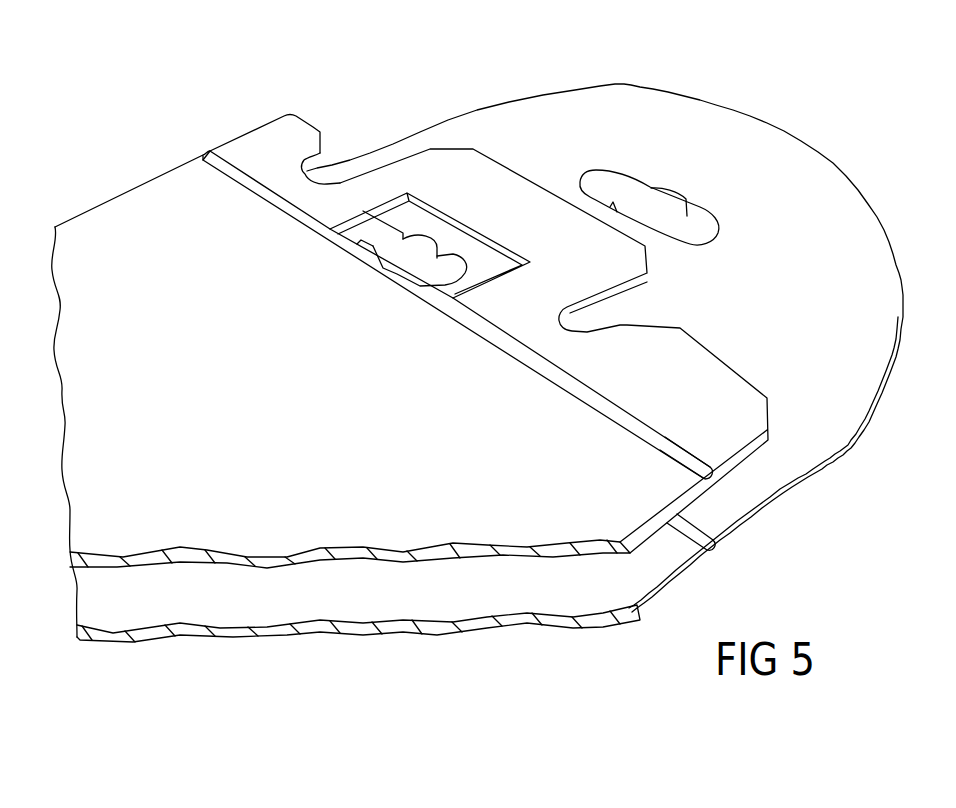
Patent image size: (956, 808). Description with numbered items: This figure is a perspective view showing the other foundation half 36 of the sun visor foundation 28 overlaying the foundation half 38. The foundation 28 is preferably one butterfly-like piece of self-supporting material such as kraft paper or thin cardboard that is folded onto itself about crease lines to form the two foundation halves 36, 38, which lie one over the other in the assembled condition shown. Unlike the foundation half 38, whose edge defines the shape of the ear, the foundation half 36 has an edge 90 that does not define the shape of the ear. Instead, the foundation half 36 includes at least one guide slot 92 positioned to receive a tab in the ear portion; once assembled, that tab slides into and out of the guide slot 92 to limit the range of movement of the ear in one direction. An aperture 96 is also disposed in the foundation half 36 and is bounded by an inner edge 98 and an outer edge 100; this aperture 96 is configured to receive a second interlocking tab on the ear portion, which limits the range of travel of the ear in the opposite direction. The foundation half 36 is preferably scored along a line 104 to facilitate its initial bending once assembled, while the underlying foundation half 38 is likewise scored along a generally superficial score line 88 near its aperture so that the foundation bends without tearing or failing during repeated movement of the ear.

The foundation 28 is at (494, 70).
The foundation half 36 is at (125, 179).
The foundation half 38 is at (849, 464).
The score line 88 is at (707, 543).
The edge 90 is at (310, 118).
The guide slot 92 is at (318, 160).
The aperture 96 is at (413, 258).
The inner edge 98 is at (395, 278).
The outer edge 100 is at (497, 253).
The score line 104 is at (710, 470).